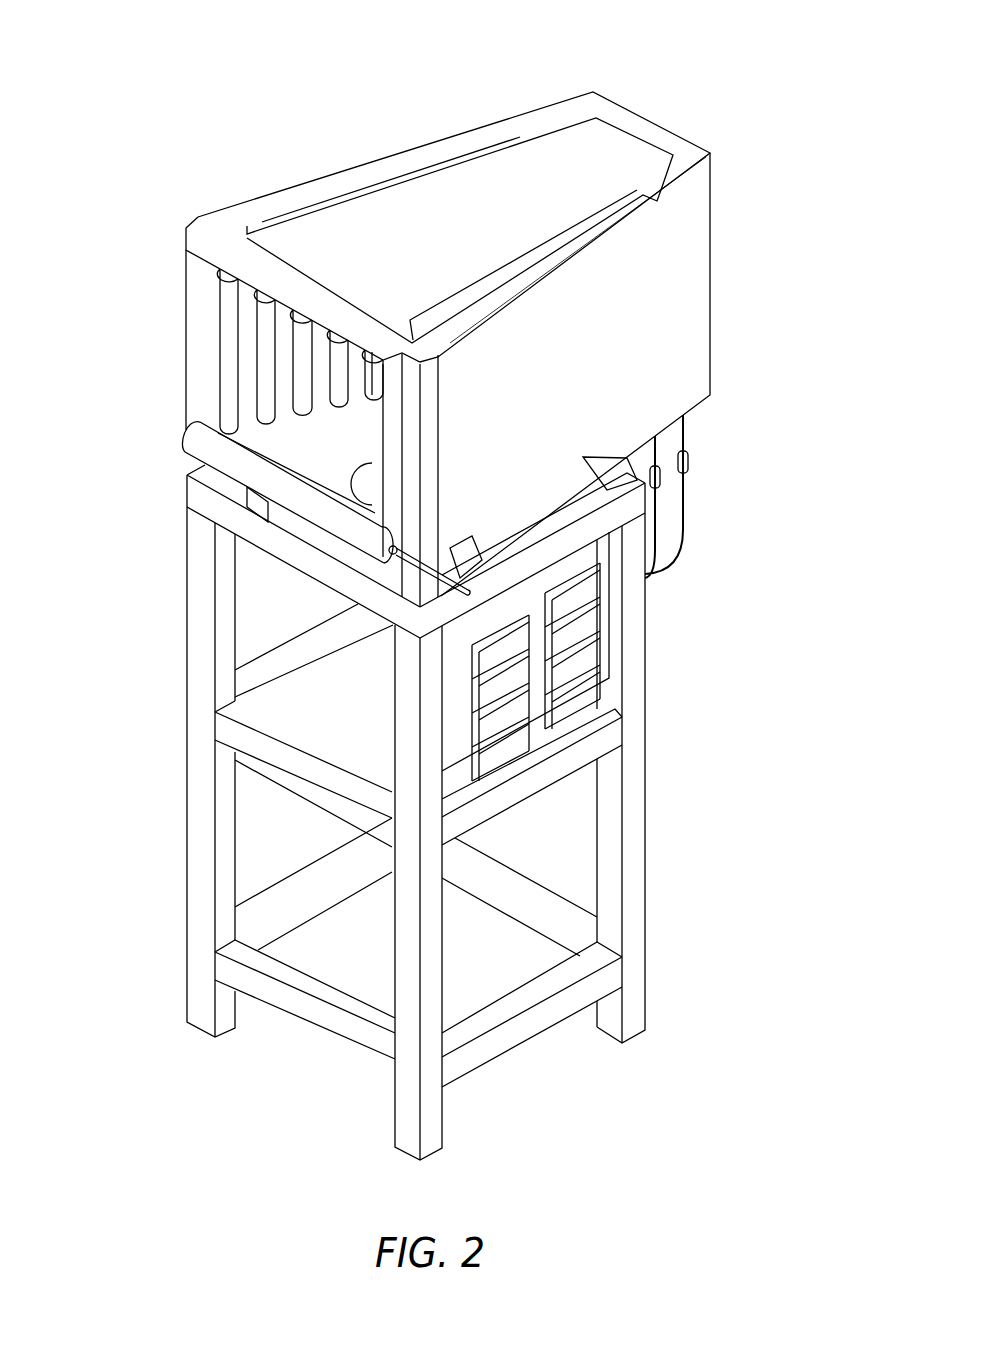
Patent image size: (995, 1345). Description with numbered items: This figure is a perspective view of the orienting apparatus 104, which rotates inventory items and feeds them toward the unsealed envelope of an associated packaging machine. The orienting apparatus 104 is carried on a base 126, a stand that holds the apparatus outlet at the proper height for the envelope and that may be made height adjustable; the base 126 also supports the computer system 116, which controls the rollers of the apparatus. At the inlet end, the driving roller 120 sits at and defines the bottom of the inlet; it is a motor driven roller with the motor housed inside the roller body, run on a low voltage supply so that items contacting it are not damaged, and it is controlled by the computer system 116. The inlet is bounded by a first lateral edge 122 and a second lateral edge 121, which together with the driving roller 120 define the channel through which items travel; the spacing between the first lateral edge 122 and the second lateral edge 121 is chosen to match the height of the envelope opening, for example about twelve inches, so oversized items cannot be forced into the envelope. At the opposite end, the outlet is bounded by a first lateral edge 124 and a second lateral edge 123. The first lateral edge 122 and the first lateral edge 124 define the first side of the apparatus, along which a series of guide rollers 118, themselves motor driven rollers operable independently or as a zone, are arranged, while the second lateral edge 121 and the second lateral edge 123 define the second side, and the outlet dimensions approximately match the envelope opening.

The orienting apparatus 104 is at (168, 128).
The computer system 116 is at (624, 690).
The guide rollers 118 is at (245, 352).
The driving roller 120 is at (222, 452).
The second lateral edge 121 is at (421, 478).
The first lateral edge 122 is at (183, 292).
The second lateral edge 123 is at (708, 150).
The first lateral edge 124 is at (597, 90).
The base 126 is at (205, 788).